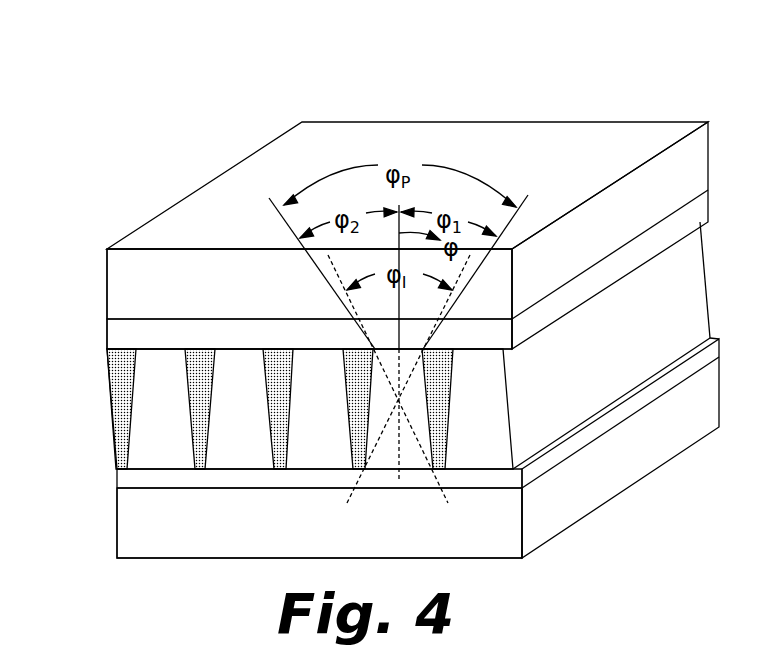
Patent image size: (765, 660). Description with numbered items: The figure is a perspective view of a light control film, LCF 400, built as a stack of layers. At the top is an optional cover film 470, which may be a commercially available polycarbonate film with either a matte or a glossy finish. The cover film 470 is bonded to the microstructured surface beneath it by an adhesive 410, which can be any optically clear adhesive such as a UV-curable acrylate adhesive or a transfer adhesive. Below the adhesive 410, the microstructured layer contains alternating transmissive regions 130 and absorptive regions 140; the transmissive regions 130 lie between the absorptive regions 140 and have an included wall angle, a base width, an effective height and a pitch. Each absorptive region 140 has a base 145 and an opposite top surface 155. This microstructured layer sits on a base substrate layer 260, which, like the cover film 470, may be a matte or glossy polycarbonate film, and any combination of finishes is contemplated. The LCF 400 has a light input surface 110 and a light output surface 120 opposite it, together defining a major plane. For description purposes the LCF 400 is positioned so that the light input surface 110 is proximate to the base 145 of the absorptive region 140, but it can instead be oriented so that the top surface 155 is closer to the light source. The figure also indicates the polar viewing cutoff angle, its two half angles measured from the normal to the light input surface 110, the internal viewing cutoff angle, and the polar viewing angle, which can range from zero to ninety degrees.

The LCF 400 is at (612, 75).
The light input surface 110 is at (302, 142).
The cover film 470 is at (285, 294).
The adhesive 410 is at (122, 331).
The transmissive regions 130 is at (150, 429).
The absorptive regions 140 is at (193, 449).
The base 145 is at (200, 349).
The top surface 155 is at (200, 470).
The light output surface 120 is at (606, 504).
The base substrate layer 260 is at (310, 533).